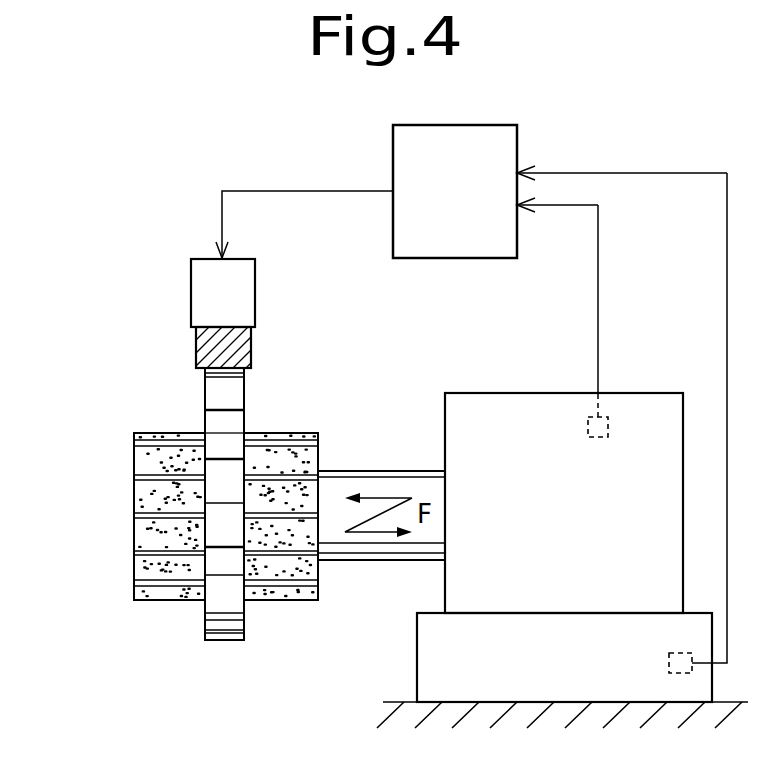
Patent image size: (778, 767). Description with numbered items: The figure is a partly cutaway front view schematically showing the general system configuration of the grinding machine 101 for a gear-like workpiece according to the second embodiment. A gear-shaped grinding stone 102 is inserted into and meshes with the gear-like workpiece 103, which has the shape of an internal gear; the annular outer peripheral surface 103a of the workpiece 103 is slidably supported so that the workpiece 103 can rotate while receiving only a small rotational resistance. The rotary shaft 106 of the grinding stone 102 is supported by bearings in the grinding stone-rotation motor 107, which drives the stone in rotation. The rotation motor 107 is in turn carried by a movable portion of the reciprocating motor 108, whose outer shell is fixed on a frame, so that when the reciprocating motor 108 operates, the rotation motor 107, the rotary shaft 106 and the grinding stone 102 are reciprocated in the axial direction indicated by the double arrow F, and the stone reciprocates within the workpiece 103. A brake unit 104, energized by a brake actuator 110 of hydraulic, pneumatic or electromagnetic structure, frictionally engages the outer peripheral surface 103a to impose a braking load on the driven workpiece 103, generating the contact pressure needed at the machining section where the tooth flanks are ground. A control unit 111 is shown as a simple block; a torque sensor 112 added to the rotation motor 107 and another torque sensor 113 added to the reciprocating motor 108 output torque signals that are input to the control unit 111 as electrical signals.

The grinding machine 101 is at (304, 174).
The gear-shaped grinding stone 102 is at (143, 572).
The gear-like workpiece 103 is at (221, 487).
The outer peripheral surface 103a is at (213, 402).
The brake unit 104 is at (215, 347).
The rotary shaft 106 is at (388, 480).
The grinding stone-rotation motor 107 is at (660, 408).
The reciprocating motor 108 is at (428, 668).
The brake actuator 110 is at (200, 278).
The control unit 111 is at (508, 142).
The torque sensor 112 is at (588, 430).
The torque sensor 113 is at (669, 664).